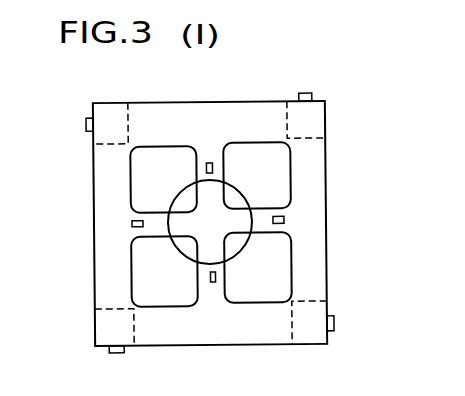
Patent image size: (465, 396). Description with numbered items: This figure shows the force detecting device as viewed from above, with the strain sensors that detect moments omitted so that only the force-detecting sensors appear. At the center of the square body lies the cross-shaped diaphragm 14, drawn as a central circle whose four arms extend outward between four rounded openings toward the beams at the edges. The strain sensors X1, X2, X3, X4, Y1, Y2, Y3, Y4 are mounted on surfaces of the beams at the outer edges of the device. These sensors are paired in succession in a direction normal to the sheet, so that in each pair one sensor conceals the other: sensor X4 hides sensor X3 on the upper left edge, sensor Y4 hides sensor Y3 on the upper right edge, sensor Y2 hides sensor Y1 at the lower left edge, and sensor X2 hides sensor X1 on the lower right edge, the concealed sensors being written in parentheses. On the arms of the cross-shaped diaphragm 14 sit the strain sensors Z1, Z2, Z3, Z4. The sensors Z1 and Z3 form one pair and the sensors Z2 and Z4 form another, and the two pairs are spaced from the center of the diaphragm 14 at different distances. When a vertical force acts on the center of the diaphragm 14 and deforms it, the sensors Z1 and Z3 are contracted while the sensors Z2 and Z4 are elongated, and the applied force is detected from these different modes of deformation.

The cross-shaped diaphragm 14 is at (206, 103).
The strain sensor Z1 is at (209, 162).
The strain sensor Z2 is at (284, 220).
The strain sensor Z3 is at (213, 282).
The strain sensor Z4 is at (135, 226).
The strain sensor X4 is at (74, 98).
The strain sensor X3 is at (86, 118).
The strain sensor Y4 is at (343, 79).
The strain sensor Y3 is at (311, 93).
The strain sensor Y2 is at (121, 367).
The strain sensor Y1 is at (118, 352).
The strain sensor X2 is at (375, 329).
The strain sensor X1 is at (333, 323).